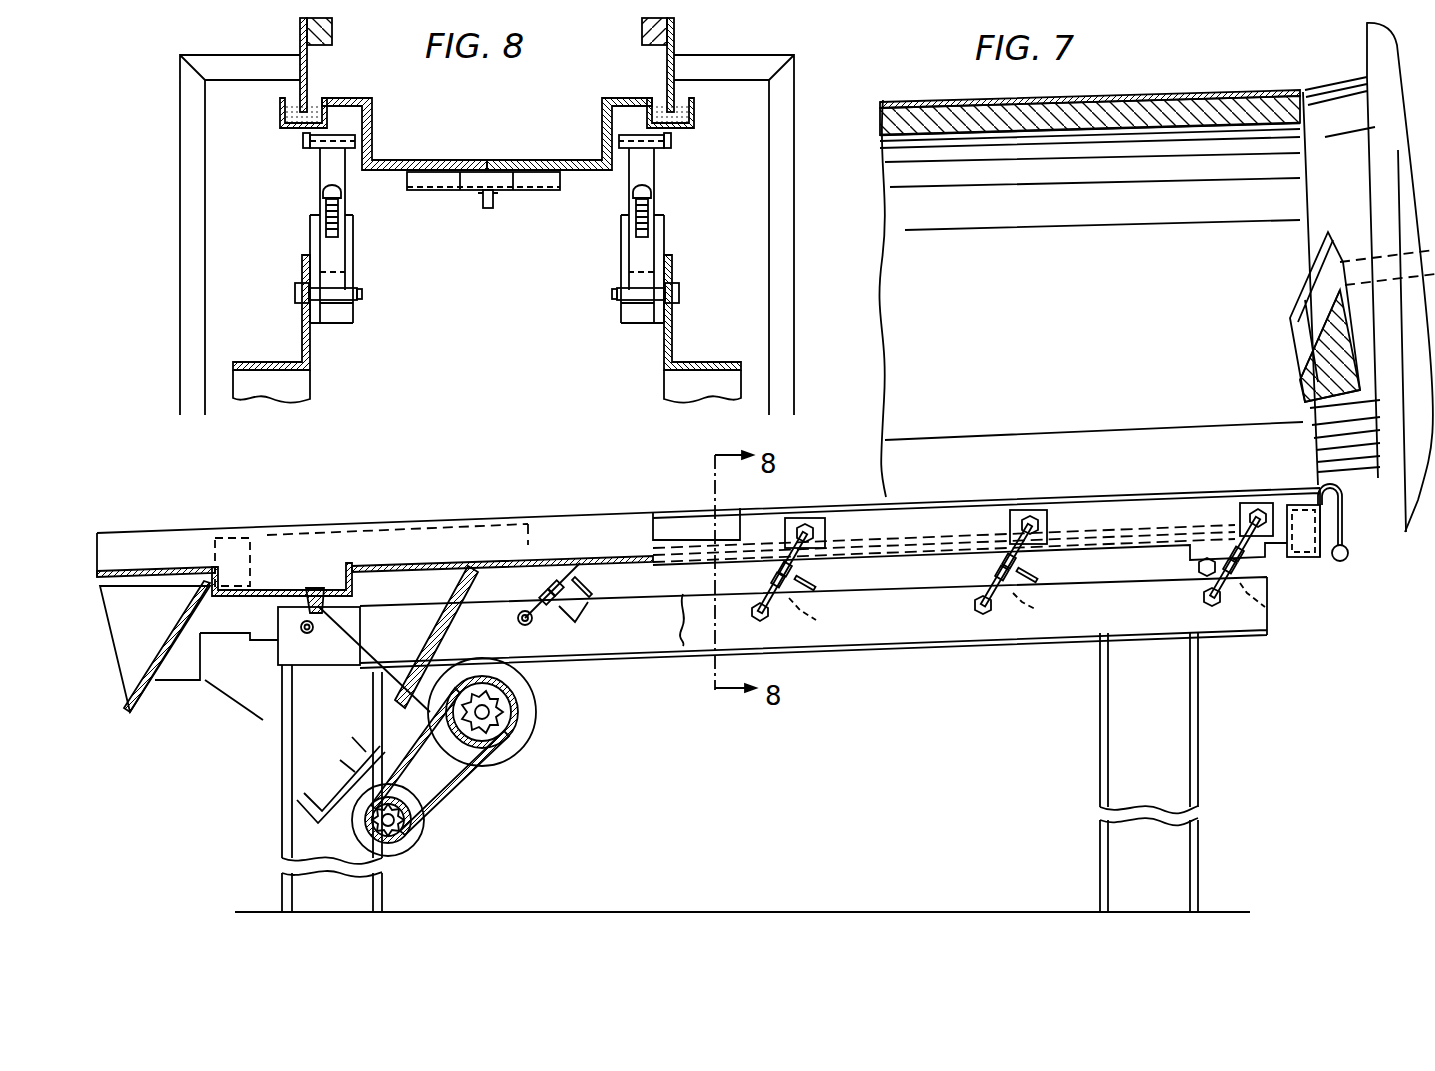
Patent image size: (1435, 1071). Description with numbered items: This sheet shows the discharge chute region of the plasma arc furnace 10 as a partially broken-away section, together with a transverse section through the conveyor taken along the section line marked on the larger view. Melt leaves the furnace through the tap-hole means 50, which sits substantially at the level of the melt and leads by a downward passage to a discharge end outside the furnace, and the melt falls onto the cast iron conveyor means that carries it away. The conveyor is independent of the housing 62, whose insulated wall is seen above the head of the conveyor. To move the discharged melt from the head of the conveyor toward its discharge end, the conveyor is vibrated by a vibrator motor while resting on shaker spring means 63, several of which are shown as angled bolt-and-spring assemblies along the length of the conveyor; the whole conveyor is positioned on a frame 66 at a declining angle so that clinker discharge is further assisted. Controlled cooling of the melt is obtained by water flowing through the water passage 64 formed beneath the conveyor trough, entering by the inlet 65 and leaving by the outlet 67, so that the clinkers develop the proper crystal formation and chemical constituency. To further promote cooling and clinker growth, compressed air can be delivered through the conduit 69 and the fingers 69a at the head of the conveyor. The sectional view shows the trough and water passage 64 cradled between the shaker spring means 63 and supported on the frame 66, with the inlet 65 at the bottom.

In FIG. 7, the furnace 10 is at (1360, 47).
In FIG. 7, the tap-hole means 50 is at (1340, 283).
In FIG. 7, the housing 62 is at (1143, 102).
In FIG. 8, the shaker spring means 63 is at (331, 203).
In FIG. 7, the shaker spring means 63 is at (582, 585).
In FIG. 8, the water passage 64 is at (577, 170).
In FIG. 7, the water passage 64 is at (458, 568).
In FIG. 8, the inlet 65 is at (487, 206).
In FIG. 8, the frame 66 is at (298, 384).
In FIG. 7, the outlet 67 is at (325, 600).
In FIG. 7, the conduit 69 is at (1346, 560).
In FIG. 7, the fingers 69a is at (1341, 489).